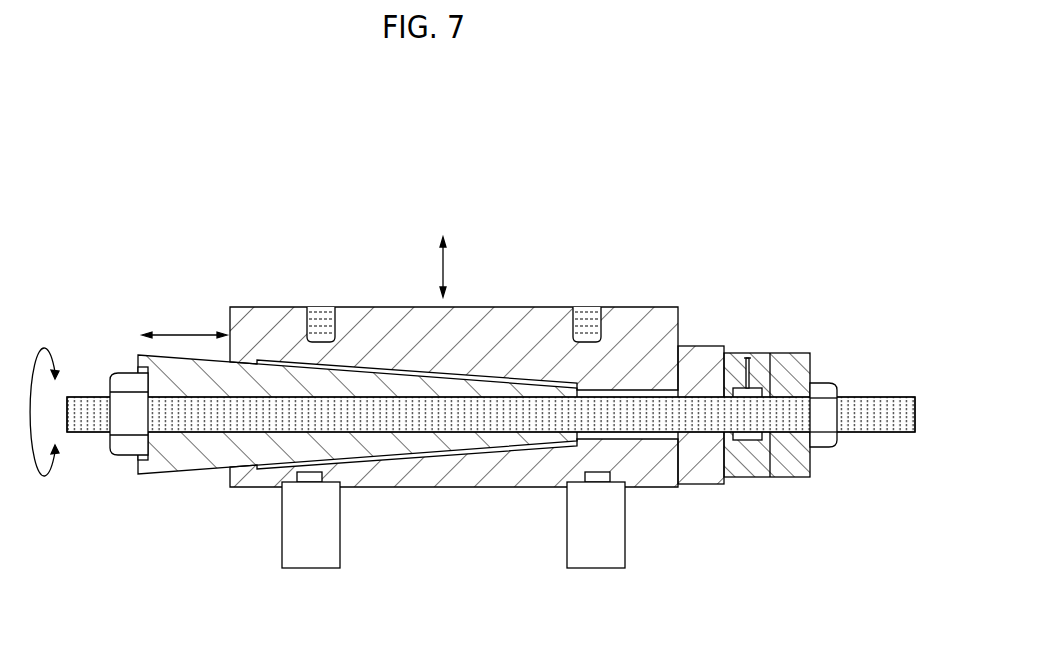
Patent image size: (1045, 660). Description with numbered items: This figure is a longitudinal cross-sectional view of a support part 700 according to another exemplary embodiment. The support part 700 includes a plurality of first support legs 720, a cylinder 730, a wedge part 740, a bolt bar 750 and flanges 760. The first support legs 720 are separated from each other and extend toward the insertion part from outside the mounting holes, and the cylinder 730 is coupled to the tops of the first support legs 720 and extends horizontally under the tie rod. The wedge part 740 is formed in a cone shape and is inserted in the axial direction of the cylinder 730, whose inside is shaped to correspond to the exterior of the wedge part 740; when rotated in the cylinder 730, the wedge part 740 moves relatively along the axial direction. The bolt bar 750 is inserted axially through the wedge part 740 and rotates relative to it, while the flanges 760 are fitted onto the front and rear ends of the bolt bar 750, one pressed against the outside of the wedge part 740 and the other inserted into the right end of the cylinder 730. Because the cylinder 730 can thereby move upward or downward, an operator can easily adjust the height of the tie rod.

The support part 700 is at (743, 238).
The first support legs 720 is at (338, 522).
The cylinder 730 is at (641, 545).
The wedge part 740 is at (350, 479).
The bolt bar 750 is at (695, 392).
The flanges 760 is at (823, 383).